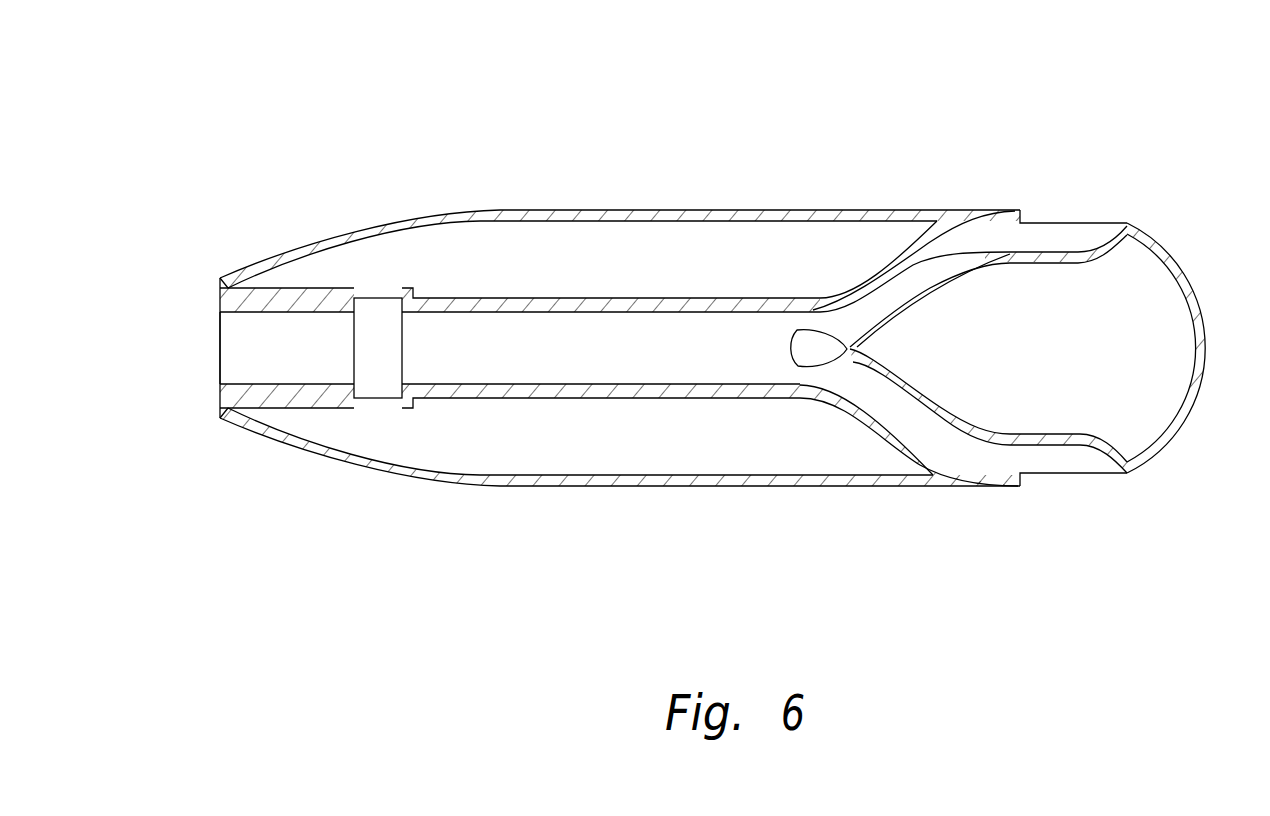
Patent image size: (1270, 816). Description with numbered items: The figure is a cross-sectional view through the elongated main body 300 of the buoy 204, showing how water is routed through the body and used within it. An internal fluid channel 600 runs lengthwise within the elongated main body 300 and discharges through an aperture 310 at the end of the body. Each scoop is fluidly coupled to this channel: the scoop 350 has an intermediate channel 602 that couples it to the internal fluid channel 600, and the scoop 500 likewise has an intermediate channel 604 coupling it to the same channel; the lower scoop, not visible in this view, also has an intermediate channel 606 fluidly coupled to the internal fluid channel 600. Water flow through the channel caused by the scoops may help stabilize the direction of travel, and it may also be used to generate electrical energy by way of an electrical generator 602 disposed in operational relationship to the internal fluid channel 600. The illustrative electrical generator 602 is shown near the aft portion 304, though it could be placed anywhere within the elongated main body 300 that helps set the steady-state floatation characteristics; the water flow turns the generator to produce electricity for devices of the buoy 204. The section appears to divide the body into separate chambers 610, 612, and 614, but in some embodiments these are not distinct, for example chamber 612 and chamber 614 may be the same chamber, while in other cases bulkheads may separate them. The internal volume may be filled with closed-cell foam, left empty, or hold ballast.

The buoy 204 is at (331, 105).
The elongated main body 300 is at (329, 459).
The aft portion 304 is at (231, 277).
The aperture 310 is at (220, 345).
The chamber 612 is at (606, 243).
The chamber 614 is at (606, 453).
The internal fluid channel 600 is at (678, 358).
The electrical generator 602 is at (377, 383).
The intermediate channel 604 is at (912, 280).
The intermediate channel 606 is at (803, 337).
The scoop 500 is at (1054, 228).
The scoop 350 is at (1054, 465).
The chamber 610 is at (1135, 402).